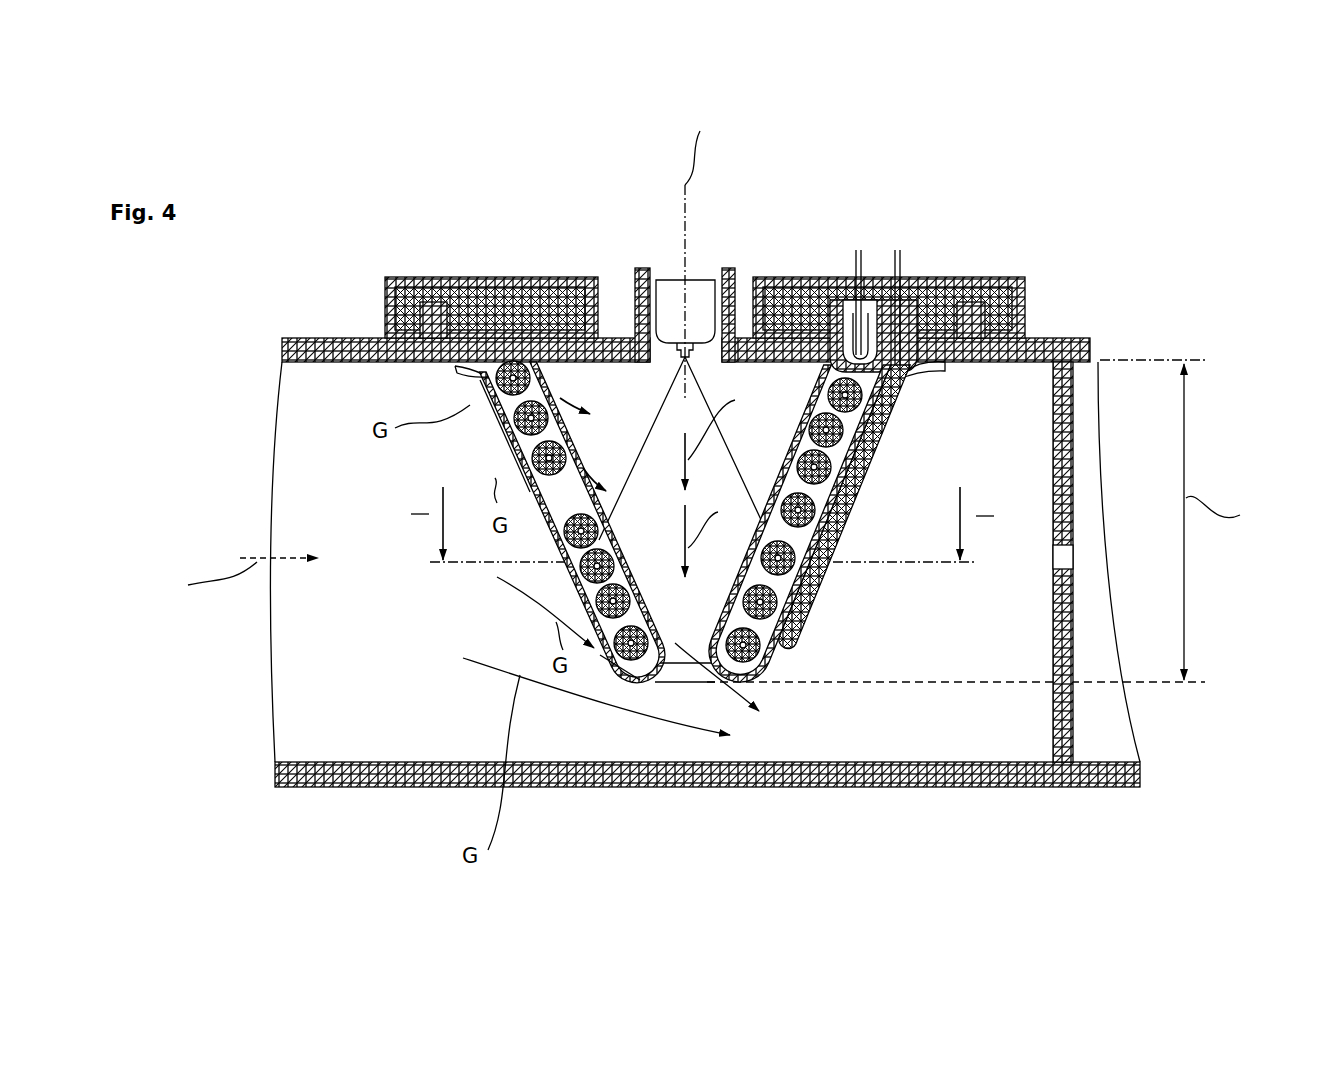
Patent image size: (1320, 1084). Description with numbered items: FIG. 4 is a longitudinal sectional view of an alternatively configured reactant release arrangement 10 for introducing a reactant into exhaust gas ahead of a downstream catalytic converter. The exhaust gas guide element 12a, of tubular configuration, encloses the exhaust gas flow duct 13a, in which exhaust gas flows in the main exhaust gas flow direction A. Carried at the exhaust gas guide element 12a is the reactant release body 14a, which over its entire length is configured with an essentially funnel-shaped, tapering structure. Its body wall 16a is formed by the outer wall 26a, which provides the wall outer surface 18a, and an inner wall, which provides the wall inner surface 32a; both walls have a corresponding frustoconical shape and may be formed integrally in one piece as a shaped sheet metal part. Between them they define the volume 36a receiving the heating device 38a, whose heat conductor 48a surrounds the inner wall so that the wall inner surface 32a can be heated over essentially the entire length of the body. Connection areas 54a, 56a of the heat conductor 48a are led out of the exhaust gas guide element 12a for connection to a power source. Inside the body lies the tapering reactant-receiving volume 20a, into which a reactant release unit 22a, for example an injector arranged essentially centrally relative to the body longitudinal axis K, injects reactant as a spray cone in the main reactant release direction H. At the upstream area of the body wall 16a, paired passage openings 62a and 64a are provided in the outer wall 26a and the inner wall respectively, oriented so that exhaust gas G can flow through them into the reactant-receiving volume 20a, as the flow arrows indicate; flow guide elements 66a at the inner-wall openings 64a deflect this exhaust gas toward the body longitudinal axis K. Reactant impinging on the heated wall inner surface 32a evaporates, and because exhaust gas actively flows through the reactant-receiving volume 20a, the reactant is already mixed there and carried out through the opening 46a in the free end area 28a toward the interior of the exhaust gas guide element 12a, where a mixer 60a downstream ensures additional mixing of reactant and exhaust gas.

The reactant release arrangement 10 is at (1192, 185).
The exhaust gas guide element 12a is at (280, 788).
The exhaust gas flow duct 13a is at (318, 515).
The reactant release body 14a is at (520, 652).
The body wall 16a is at (823, 657).
The wall outer surface 18a is at (578, 595).
The reactant-receiving volume 20a is at (604, 408).
The reactant release unit 22a is at (692, 278).
The outer wall 26a is at (548, 533).
The free end area 28a is at (788, 696).
The wall inner surface 32a is at (795, 406).
The volume 36a is at (838, 567).
The heating device 38a is at (598, 662).
The opening 46a is at (684, 686).
The heat conductor 48a is at (876, 374).
The connection area 54a is at (860, 256).
The connection area 56a is at (898, 258).
The mixer 60a is at (1075, 735).
The passage opening 62a is at (485, 408).
The passage opening 64a is at (490, 374).
The flow guide element 66a is at (563, 296).